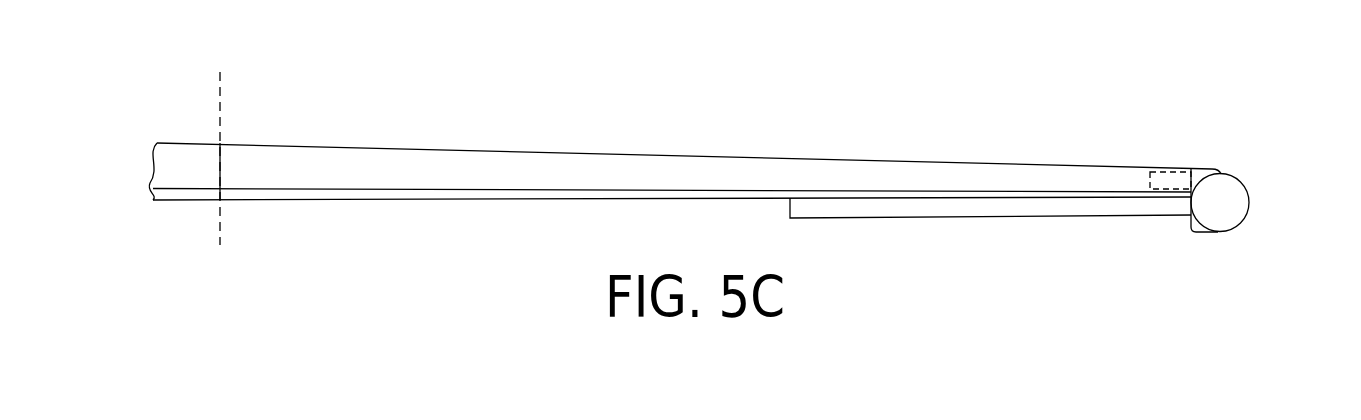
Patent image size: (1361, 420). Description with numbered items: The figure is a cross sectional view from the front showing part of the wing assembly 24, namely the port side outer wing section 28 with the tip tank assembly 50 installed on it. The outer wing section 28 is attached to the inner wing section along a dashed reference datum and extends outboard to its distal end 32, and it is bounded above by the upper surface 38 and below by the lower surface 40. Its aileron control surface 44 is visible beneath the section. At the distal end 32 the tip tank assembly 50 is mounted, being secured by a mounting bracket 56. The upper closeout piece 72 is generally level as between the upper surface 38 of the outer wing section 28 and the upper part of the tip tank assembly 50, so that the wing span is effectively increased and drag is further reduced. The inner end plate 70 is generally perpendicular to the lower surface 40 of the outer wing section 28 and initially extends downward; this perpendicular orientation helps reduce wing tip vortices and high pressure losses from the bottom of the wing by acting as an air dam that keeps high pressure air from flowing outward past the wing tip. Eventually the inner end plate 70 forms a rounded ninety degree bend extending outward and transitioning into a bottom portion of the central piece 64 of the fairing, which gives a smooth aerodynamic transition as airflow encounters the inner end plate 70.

The wing assembly 24 is at (256, 121).
The port side outer wing section 28 is at (431, 209).
The distal end 32 is at (1135, 180).
The upper surface 38 is at (590, 149).
The lower surface 40 is at (590, 201).
The aileron control surface 44 is at (998, 206).
The tip tank assembly 50 is at (1258, 185).
The mounting brackets 56 is at (1162, 178).
The central piece 64 is at (1247, 213).
The inner end plate 70 is at (1181, 226).
The upper closeout piece 72 is at (1211, 163).